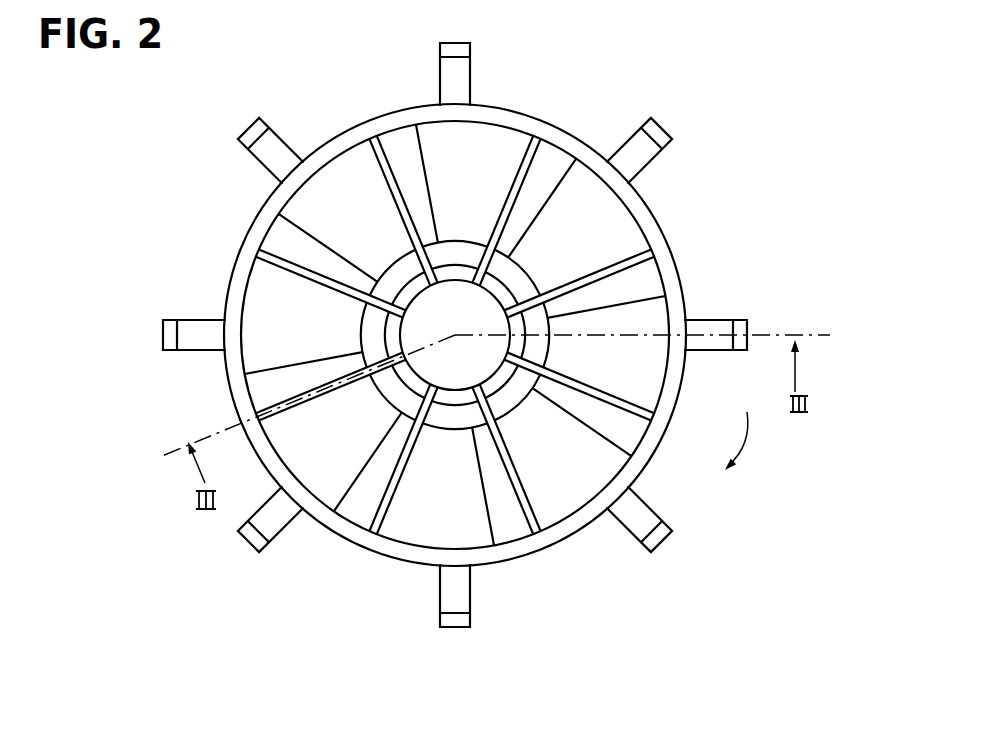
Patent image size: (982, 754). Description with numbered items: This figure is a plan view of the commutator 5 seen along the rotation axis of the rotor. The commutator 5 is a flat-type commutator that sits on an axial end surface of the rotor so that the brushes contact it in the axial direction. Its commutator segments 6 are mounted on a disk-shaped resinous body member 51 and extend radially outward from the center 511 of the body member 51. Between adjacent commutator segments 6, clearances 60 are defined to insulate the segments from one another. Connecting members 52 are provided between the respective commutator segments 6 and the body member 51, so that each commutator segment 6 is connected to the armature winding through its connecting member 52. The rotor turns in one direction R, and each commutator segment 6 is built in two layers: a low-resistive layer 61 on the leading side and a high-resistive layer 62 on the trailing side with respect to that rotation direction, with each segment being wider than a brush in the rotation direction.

The commutator 5 is at (712, 536).
The commutator segment 6 is at (337, 147).
The body member 51 is at (576, 520).
The center 511 is at (448, 350).
The connecting member 52 is at (663, 134).
The clearance 60 is at (627, 263).
The low-resistive layer 61 is at (607, 237).
The high-resistive layer 62 is at (543, 178).